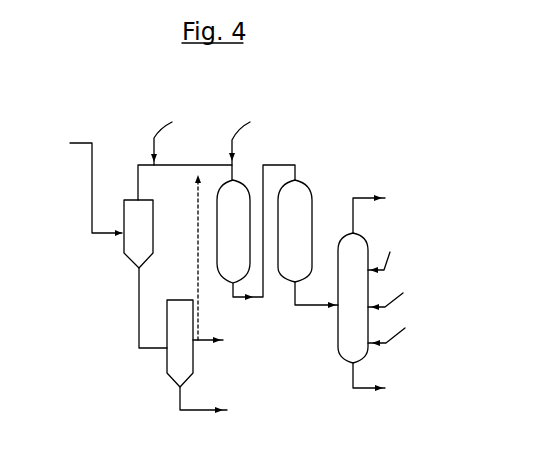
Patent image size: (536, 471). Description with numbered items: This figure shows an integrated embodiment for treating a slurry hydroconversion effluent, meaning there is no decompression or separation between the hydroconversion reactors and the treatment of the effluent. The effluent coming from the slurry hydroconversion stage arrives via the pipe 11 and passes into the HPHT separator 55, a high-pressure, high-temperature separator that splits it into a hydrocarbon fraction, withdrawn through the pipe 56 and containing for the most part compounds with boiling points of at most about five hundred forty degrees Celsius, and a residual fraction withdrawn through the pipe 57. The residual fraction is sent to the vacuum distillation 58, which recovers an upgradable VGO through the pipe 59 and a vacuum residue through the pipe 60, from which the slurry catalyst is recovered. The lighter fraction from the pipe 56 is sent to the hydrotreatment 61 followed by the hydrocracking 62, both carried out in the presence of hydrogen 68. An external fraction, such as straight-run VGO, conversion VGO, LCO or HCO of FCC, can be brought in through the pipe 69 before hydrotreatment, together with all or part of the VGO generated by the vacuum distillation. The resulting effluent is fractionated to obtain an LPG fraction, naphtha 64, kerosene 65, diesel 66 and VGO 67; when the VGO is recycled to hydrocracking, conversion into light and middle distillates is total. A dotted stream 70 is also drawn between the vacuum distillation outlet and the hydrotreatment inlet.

The pipe 11 is at (72, 142).
The HPHT separator 55 is at (155, 207).
The pipe 56 is at (137, 178).
The pipe 57 is at (139, 290).
The vacuum distillation 58 is at (170, 300).
The pipe 59 is at (195, 343).
The pipe 60 is at (196, 413).
The hydrotreatment 61 is at (238, 183).
The hydrocracking 62 is at (312, 193).
The naphtha 64 is at (372, 279).
The kerosene 65 is at (397, 291).
The diesel 66 is at (399, 328).
The VGO 67 is at (370, 394).
The hydrogen 68 is at (251, 133).
The pipe 69 is at (173, 135).
The recycle stream 70 is at (197, 240).